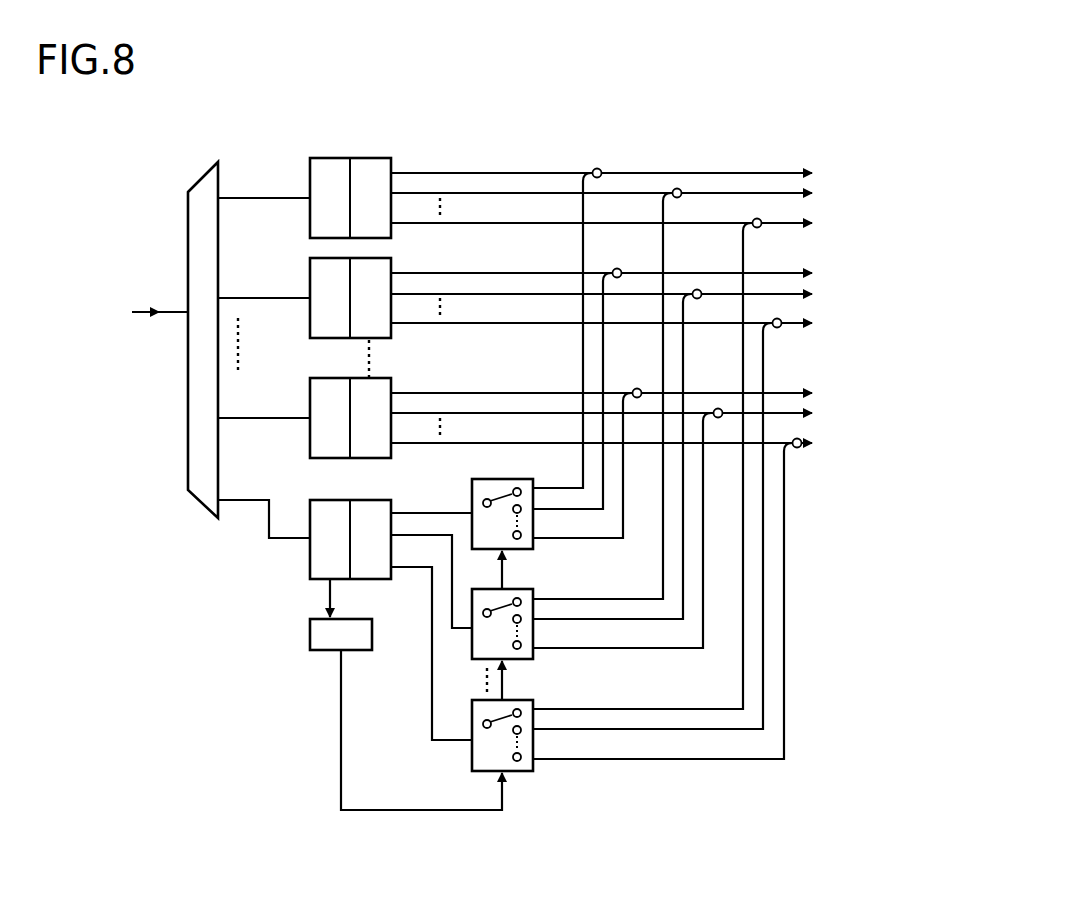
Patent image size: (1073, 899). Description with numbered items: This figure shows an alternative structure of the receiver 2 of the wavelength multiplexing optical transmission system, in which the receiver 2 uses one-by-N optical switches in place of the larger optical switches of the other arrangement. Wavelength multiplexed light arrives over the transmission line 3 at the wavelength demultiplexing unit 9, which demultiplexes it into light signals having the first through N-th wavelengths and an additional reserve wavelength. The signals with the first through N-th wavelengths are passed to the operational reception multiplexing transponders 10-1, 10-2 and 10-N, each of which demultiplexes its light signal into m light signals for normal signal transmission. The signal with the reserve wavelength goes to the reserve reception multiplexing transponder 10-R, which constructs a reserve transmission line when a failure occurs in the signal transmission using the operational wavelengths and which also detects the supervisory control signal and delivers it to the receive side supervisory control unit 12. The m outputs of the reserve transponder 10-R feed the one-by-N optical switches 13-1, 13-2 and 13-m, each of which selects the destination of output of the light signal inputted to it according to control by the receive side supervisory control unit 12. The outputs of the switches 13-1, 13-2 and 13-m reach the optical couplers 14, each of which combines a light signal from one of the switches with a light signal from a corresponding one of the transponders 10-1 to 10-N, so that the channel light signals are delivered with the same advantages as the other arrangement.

The receiver 2 is at (186, 137).
The transmission line 3 is at (171, 304).
The wavelength demultiplexing unit 9 is at (202, 174).
The reception multiplexing transponder 10-1 is at (306, 213).
The reception multiplexing transponder 10-2 is at (306, 325).
The reception multiplexing transponder 10-N is at (306, 428).
The reserve reception multiplexing transponder 10-R is at (306, 551).
The receive side supervisory control unit 12 is at (373, 636).
The 1×N optical switch 13-1 is at (536, 551).
The 1×N optical switch 13-2 is at (536, 661).
The 1×N optical switch 13-m is at (536, 773).
The optical coupler 14 is at (600, 168).